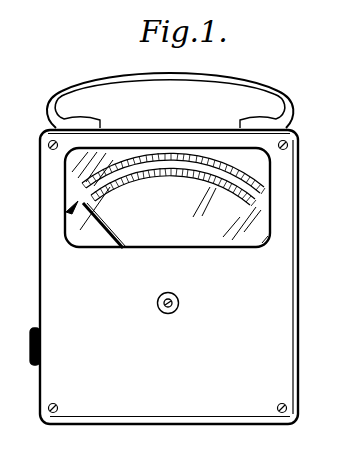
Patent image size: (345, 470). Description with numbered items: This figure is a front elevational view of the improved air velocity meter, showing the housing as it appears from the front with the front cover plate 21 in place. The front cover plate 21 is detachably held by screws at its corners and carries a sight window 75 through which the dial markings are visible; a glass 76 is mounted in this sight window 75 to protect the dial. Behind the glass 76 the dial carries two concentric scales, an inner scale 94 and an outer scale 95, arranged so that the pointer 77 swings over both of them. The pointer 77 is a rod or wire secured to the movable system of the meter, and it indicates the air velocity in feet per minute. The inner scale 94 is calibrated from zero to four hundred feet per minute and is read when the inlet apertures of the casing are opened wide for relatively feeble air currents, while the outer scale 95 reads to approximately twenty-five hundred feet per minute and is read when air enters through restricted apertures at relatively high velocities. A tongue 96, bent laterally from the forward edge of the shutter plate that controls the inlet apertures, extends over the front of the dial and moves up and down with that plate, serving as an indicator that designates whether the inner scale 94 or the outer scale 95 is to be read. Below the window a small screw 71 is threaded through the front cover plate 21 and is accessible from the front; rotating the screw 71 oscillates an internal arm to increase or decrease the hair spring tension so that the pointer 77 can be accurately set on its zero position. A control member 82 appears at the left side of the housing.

The front cover plate 21 is at (67, 368).
The screw 71 is at (167, 314).
The sight window 75 is at (187, 243).
The glass 76 is at (224, 240).
The pointer 77 is at (113, 243).
The push button 82 is at (33, 328).
The inner scale 94 is at (80, 200).
The outer scale 95 is at (135, 213).
The tongue 96 is at (67, 227).